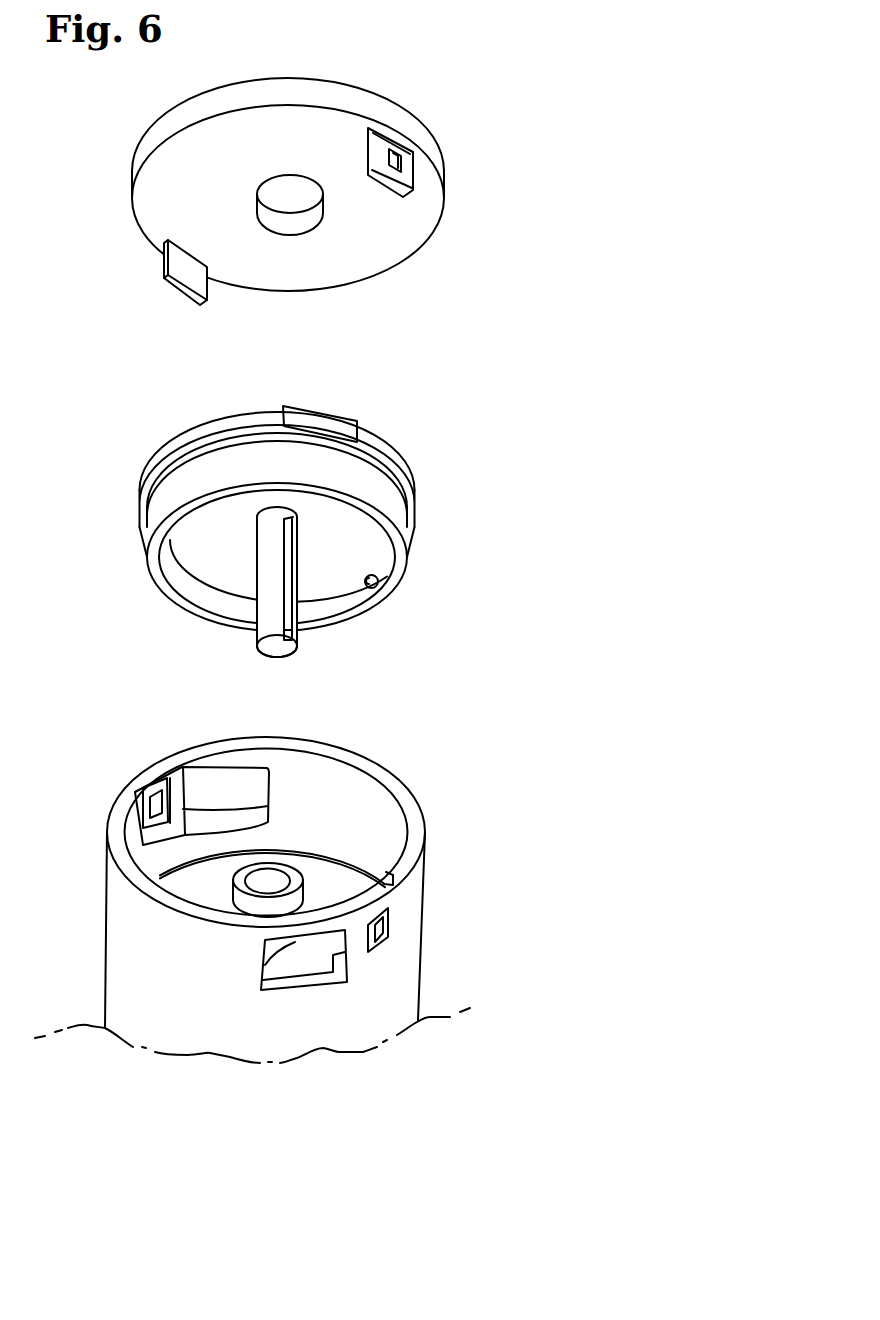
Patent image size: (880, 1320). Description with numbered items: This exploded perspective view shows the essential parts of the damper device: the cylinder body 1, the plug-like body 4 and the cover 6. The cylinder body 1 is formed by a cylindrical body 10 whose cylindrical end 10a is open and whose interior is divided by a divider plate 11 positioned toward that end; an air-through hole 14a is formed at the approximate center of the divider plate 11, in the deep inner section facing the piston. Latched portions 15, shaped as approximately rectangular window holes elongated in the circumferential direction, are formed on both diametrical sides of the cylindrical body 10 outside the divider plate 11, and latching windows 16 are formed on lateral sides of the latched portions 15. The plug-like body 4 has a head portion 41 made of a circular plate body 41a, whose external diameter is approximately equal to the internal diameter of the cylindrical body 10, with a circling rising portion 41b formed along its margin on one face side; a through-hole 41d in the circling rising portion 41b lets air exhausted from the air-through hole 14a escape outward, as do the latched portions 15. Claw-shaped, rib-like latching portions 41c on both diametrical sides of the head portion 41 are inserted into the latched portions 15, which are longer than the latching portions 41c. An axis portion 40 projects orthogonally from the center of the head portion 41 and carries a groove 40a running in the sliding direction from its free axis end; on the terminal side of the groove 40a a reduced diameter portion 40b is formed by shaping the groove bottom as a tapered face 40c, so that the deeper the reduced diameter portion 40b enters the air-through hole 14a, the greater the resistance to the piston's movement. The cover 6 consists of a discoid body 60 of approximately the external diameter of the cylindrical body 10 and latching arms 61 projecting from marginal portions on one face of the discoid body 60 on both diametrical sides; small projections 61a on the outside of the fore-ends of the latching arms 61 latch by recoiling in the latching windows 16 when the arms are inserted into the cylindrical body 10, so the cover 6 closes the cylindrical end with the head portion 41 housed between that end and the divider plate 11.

The cylinder body 1 is at (397, 1003).
The plug-like body 4 is at (403, 457).
The cover 6 is at (288, 145).
The discoid body 60 is at (286, 86).
The latching arm 61 is at (410, 179).
The small projection 61a is at (402, 152).
The cylindrical body 10 is at (405, 953).
The cylindrical end 10a is at (413, 820).
The divider plate 11 is at (317, 877).
The air-through hole 14a is at (267, 882).
The latched portion 15 is at (213, 802).
The latching window 16 is at (155, 790).
The axis portion 40 is at (262, 648).
The groove 40a is at (292, 572).
The reduced diameter portion 40b is at (423, 562).
The tapered face shape 40c is at (296, 522).
The head portion 41 is at (244, 412).
The circular plate body 41a is at (181, 439).
The circling rising portion 41b is at (162, 502).
The latching portion 41c is at (317, 417).
The through-hole 41d is at (378, 582).